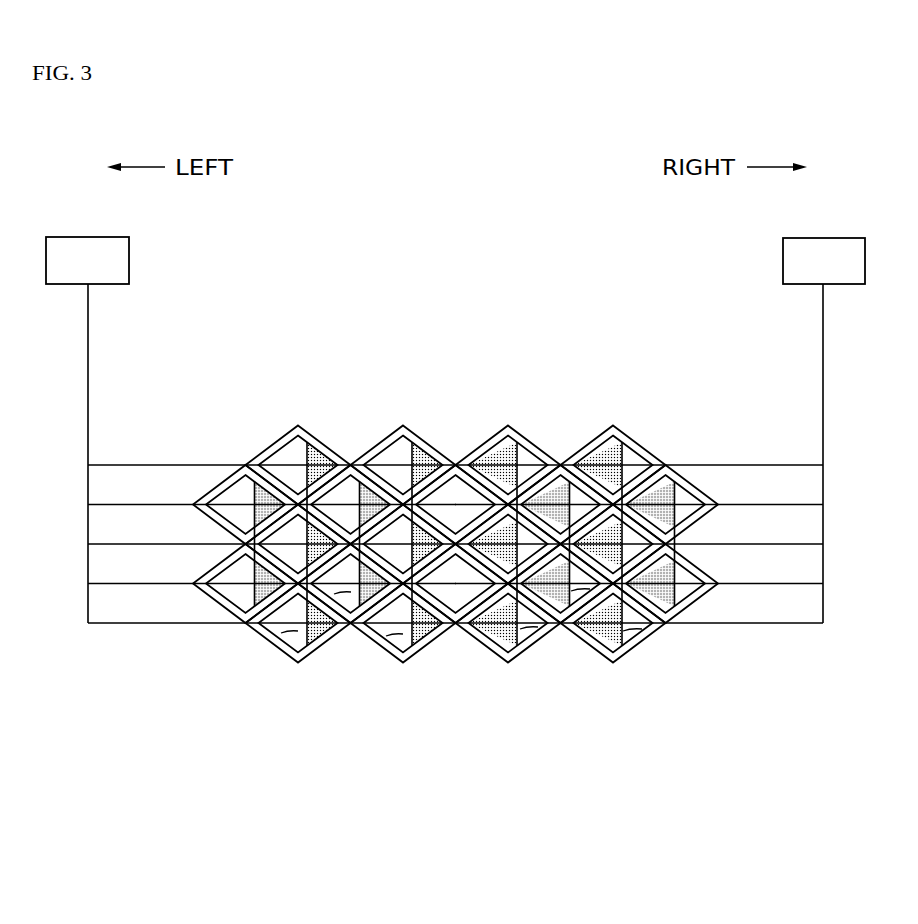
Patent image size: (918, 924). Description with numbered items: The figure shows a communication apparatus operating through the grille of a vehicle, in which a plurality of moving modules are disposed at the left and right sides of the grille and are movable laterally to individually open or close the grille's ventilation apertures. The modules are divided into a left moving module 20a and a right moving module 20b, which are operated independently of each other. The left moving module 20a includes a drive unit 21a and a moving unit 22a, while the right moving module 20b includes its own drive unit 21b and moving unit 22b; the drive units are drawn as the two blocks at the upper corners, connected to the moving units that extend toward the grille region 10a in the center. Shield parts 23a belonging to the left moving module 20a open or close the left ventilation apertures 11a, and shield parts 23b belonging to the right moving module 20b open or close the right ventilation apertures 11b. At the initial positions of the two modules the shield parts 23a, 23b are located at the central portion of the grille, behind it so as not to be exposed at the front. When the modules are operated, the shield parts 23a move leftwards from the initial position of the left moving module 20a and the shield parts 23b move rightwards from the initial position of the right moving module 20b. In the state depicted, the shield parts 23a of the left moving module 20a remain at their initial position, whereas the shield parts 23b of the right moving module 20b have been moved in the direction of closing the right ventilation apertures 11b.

The touch electrode layer 10a is at (257, 652).
The left ventilation apertures 11a is at (290, 632).
The right ventilation apertures 11b is at (528, 630).
The left moving module 20a is at (373, 328).
The right moving module 20b is at (650, 250).
The drive unit 21a is at (122, 263).
The drive unit 21b is at (790, 263).
The moving unit 22a is at (186, 463).
The moving unit 22b is at (727, 465).
The shield parts 23a is at (320, 460).
The shield parts 23b is at (593, 460).